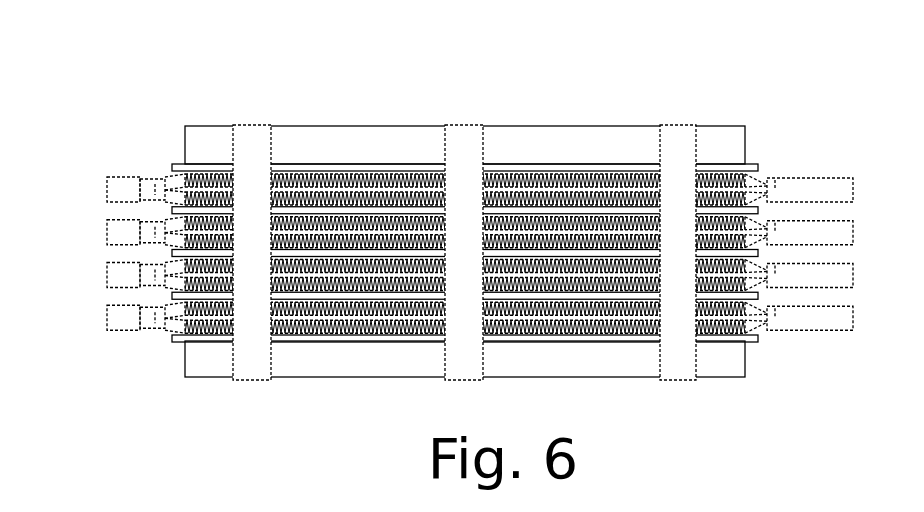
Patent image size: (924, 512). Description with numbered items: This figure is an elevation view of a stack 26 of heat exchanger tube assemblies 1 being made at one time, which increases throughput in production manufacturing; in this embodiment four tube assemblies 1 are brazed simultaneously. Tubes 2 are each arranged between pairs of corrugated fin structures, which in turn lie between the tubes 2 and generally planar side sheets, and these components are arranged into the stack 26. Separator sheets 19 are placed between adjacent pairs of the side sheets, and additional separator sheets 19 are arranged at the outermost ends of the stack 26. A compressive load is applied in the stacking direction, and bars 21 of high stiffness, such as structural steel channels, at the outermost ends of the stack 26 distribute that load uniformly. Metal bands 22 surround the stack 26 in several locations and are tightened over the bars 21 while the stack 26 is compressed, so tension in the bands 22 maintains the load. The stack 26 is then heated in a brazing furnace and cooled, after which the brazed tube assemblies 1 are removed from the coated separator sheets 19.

The tube assembly 1 is at (103, 320).
The tube 2 is at (750, 190).
The separator sheet 19 is at (172, 163).
The bar 21 is at (340, 138).
The metal band 22 is at (253, 133).
The stack 26 is at (774, 111).